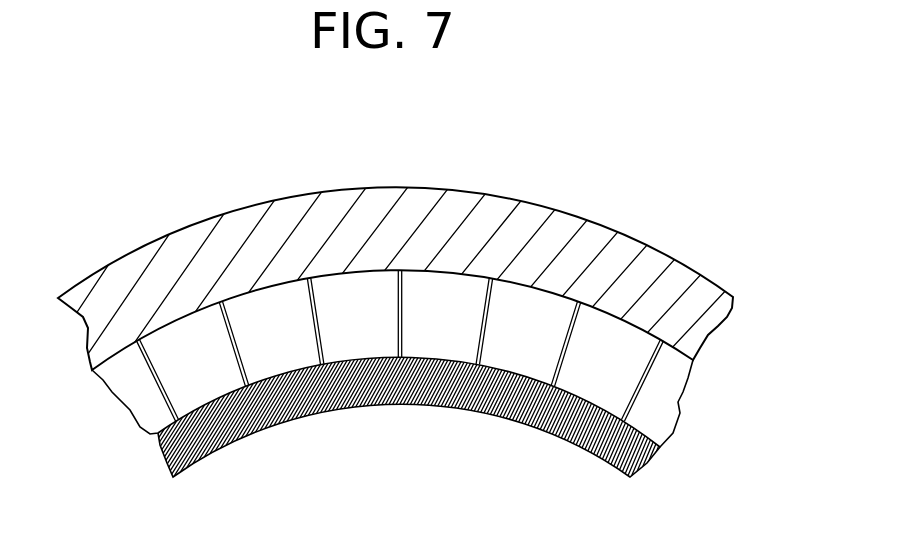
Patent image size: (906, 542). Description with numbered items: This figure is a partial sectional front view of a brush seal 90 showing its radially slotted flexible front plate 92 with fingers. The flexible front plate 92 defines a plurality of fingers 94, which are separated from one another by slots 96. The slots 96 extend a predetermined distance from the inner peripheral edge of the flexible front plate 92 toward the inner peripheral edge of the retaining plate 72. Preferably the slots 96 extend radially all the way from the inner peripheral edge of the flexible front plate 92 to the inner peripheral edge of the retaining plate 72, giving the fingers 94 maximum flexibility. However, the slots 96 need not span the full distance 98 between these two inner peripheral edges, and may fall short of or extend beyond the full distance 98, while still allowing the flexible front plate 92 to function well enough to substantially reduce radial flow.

The brush seal 90 is at (429, 307).
The retaining plate 72 is at (713, 316).
The fingers 94 is at (392, 281).
The full distance 98 is at (220, 300).
The slots 96 is at (643, 387).
The flexible front plate 92 is at (522, 343).